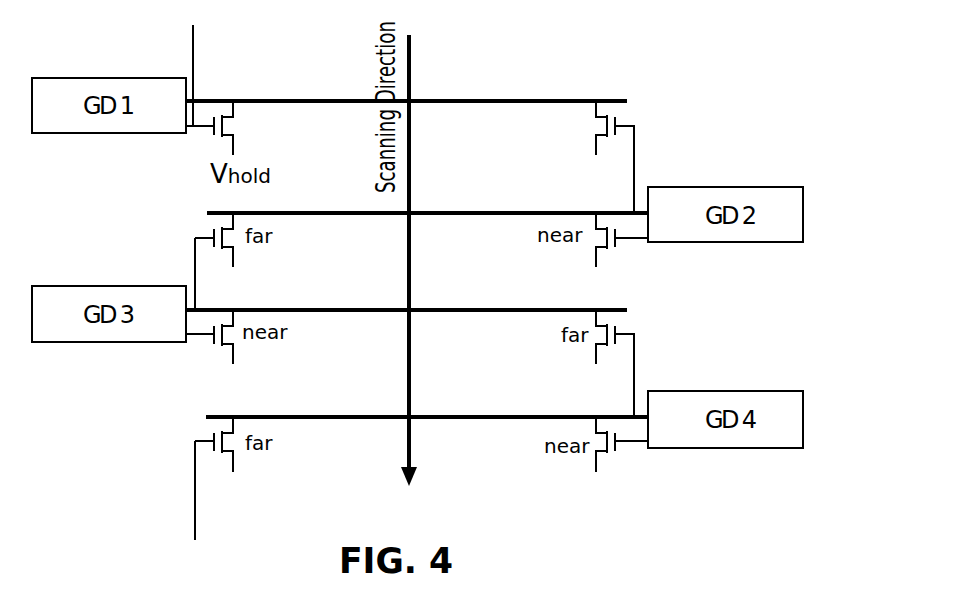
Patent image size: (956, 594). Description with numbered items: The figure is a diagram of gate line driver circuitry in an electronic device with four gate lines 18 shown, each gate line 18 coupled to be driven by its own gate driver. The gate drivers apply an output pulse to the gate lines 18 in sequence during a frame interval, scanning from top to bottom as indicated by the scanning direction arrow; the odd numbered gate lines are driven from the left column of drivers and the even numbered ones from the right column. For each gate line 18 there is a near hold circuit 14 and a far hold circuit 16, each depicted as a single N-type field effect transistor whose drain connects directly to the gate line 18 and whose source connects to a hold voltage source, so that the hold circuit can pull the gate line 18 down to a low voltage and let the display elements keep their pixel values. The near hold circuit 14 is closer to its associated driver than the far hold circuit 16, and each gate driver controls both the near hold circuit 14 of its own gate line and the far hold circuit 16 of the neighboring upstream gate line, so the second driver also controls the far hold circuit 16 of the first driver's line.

The near hold circuit 14 is at (235, 122).
The far hold circuit 16 is at (590, 132).
The gate line 18 is at (290, 98).